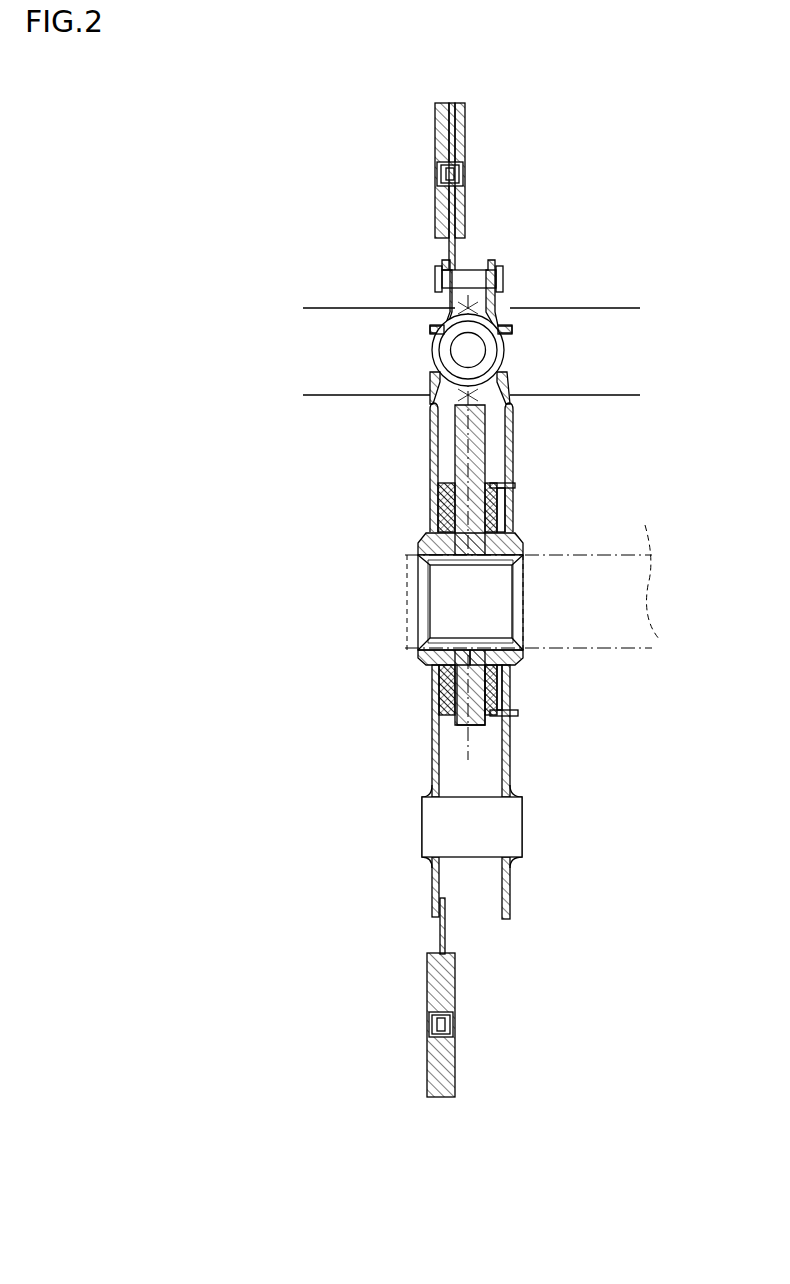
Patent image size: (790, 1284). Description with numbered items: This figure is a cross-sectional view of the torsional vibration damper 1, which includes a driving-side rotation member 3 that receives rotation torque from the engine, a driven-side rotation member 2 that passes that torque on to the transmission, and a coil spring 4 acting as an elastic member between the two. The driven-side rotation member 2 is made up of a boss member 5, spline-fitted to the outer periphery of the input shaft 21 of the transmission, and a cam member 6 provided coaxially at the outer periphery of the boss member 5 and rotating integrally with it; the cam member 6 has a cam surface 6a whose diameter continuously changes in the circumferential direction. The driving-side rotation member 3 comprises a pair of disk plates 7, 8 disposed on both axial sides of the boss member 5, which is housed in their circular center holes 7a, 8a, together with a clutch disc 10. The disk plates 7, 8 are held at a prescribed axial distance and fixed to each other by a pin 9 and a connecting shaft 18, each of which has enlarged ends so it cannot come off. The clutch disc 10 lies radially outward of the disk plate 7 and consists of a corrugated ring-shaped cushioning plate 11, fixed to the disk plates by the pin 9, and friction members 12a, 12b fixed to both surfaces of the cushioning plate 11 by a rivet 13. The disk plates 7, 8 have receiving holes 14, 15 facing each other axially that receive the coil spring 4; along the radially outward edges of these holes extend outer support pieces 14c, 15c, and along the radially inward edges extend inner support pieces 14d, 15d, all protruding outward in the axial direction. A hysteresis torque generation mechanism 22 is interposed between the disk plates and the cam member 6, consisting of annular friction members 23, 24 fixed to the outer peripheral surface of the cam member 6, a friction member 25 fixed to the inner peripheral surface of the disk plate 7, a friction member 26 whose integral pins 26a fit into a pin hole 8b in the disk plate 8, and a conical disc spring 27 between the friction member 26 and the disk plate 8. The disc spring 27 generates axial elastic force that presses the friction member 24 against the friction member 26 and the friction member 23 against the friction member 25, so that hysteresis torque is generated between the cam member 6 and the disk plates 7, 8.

The torsional vibration damper 1 is at (500, 95).
The driven-side rotation member 2 is at (527, 540).
The driving-side rotation member 3 is at (500, 308).
The coil spring 4 is at (472, 350).
The boss member 5 is at (432, 543).
The cam member 6 is at (446, 690).
The cam surface 6a is at (470, 728).
The disk plate 7 is at (430, 425).
The center hole 7a is at (421, 652).
The disk plate 8 is at (512, 425).
The center hole 8a is at (523, 652).
The pin hole 8b is at (510, 725).
The pin 9 is at (476, 274).
The clutch disc 10 is at (427, 170).
The cushioning plate 11 is at (457, 252).
The friction member 12a is at (435, 118).
The friction member 12b is at (465, 118).
The rivet 13 is at (463, 173).
The receiving hole 14 is at (432, 346).
The outer support piece 14c is at (432, 326).
The inner support piece 14d is at (430, 374).
The receiving hole 15 is at (506, 346).
The outer support piece 15c is at (506, 326).
The inner support piece 15d is at (508, 374).
The connecting shaft 18 is at (506, 828).
The input shaft 21 is at (533, 572).
The hysteresis torque generation mechanism 22 is at (510, 506).
The friction member 23 is at (443, 700).
The friction member 24 is at (497, 690).
The friction member 25 is at (437, 508).
The friction member 26 is at (507, 520).
The pin 26a is at (520, 485).
The disc spring 27 is at (510, 705).